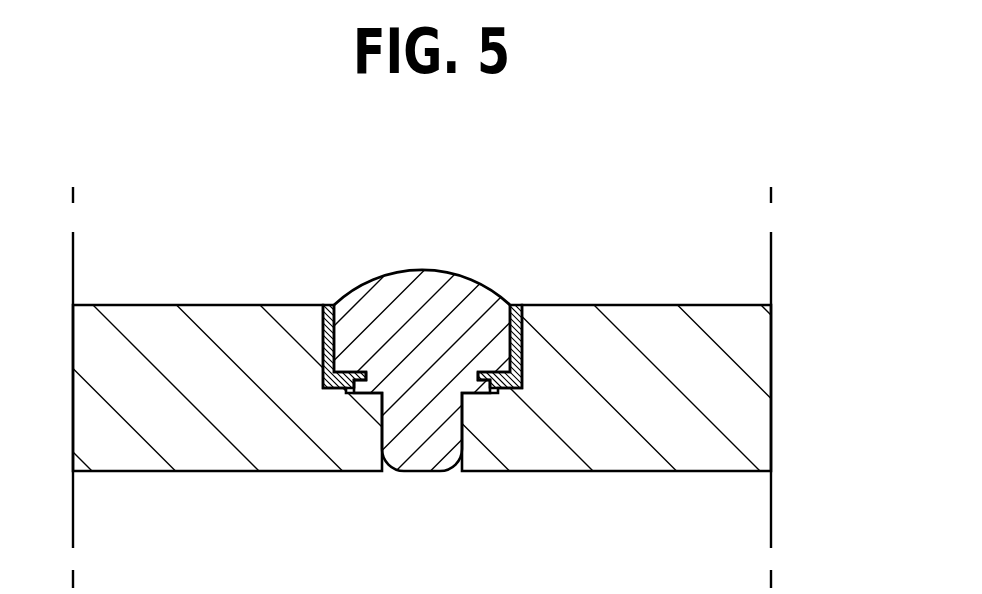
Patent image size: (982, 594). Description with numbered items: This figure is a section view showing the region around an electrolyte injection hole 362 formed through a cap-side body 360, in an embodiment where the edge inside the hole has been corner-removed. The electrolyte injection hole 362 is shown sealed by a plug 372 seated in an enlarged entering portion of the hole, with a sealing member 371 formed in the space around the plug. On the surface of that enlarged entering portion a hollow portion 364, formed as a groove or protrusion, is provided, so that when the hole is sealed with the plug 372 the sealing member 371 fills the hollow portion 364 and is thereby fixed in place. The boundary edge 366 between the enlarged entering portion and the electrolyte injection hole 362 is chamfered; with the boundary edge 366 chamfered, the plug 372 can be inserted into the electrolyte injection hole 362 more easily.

The substrate 360 is at (668, 330).
The electrolyte injection hole 362 is at (455, 472).
The hollow portion 364 is at (490, 390).
The boundary edge 366 is at (368, 380).
The sealing member 371 is at (523, 358).
The plug 372 is at (428, 254).